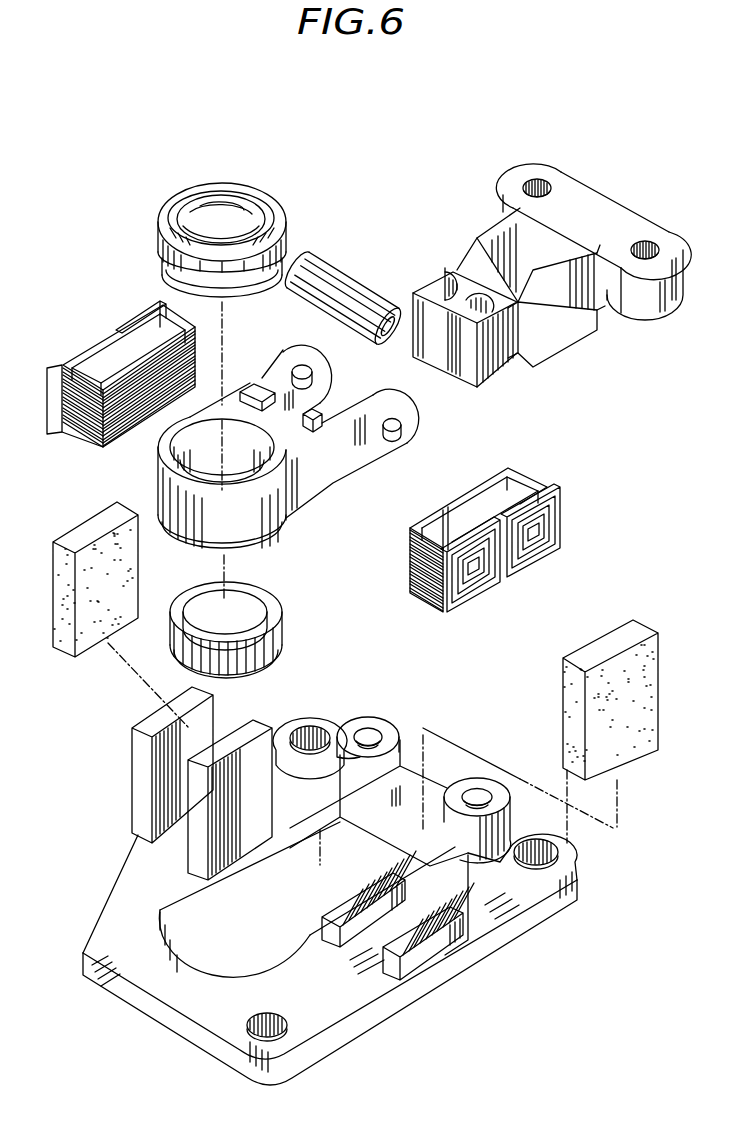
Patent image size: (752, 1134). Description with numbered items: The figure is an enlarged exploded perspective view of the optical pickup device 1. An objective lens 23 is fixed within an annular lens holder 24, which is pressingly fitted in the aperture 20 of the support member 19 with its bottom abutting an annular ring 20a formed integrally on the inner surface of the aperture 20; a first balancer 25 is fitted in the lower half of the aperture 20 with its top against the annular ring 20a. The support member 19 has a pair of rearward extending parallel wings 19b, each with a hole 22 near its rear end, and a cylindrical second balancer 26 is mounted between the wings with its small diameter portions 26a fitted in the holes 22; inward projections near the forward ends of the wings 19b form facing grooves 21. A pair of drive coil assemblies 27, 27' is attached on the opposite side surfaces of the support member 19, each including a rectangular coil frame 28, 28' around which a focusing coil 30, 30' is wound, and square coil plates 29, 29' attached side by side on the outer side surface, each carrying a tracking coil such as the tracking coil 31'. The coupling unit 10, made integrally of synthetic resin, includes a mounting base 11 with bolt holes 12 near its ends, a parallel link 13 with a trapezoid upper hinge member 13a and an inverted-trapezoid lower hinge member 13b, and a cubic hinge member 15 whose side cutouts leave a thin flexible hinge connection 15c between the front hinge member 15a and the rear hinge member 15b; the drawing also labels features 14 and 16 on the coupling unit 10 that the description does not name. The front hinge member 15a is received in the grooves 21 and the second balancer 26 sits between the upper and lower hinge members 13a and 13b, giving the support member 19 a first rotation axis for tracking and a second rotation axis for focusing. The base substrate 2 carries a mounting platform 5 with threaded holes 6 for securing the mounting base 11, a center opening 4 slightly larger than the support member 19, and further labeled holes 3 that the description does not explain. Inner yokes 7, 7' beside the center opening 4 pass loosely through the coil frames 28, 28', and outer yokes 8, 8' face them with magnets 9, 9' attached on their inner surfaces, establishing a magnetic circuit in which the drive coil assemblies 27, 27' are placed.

The optical pickup device 1 is at (403, 193).
The base substrate 2 is at (197, 1033).
The mounting hole 3 is at (309, 730).
The center opening 4 is at (177, 910).
The mounting platform 5 is at (408, 747).
The threaded holes 6 is at (368, 733).
The inner yoke 7 is at (182, 803).
The inner yoke 7' is at (369, 928).
The outer yoke 8 is at (155, 765).
The outer yoke 8' is at (428, 964).
The magnet 9 is at (80, 579).
The magnet 9' is at (627, 700).
The coupling unit 10 is at (486, 229).
The mounting base 11 is at (618, 220).
The bolt holes 12 is at (536, 182).
The parallel link 13 is at (530, 230).
The upper hinge member 13a is at (560, 274).
The lower hinge member 13b is at (557, 350).
The groove edge 14 is at (593, 258).
The hinge member 15 is at (475, 385).
The front hinge member 15a is at (460, 380).
The rear hinge member 15b is at (510, 358).
The hinge connection 15c is at (452, 280).
The groove 16 is at (519, 303).
The support member 19 is at (293, 517).
The parallel wings 19b is at (283, 370).
The aperture 20 is at (165, 446).
The annular ring 20a is at (180, 420).
The grooves 21 is at (250, 383).
The holes 22 is at (312, 373).
The objective lens 23 is at (223, 205).
The lens holder 24 is at (282, 221).
The first balancer 25 is at (284, 636).
The second balancer 26 is at (360, 290).
The small diameter portions 26a is at (295, 258).
The drive coil assembly 27 is at (128, 375).
The rectangular coil frame 28 is at (109, 354).
The square coil plates 29 is at (93, 355).
The focusing coil 30 is at (129, 408).
The drive coil assembly 27' is at (503, 533).
The rectangular coil frame 28' is at (491, 490).
The square coil plates 29' is at (521, 569).
The focusing coil 30' is at (411, 582).
The tracking coil 31' is at (521, 565).